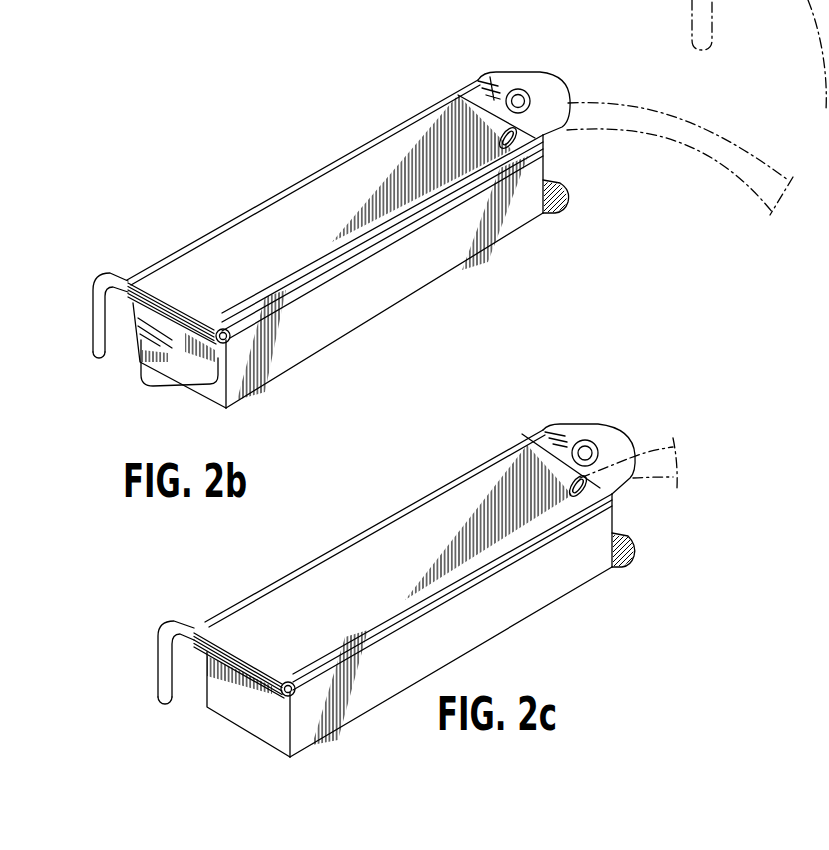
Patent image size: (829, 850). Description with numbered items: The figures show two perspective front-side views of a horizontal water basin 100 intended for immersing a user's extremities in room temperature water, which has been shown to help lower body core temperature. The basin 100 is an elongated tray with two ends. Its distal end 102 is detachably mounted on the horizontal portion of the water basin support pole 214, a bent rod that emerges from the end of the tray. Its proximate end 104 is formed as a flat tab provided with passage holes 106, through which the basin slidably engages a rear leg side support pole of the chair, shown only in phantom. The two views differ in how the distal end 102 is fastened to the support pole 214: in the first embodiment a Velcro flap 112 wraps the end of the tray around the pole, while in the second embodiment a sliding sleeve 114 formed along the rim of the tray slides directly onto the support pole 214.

In FIG. 2b, the water basin 100 is at (306, 169).
In FIG. 2b, the distal end 102 is at (184, 290).
In FIG. 2b, the proximate end 104 is at (483, 81).
In FIG. 2b, the passage holes 106 is at (519, 97).
In FIG. 2b, the Velcro flap 112 is at (177, 350).
In FIG. 2c, the sliding sleeve 114 is at (238, 647).
In FIG. 2b, the water basin support pole 214 is at (112, 272).